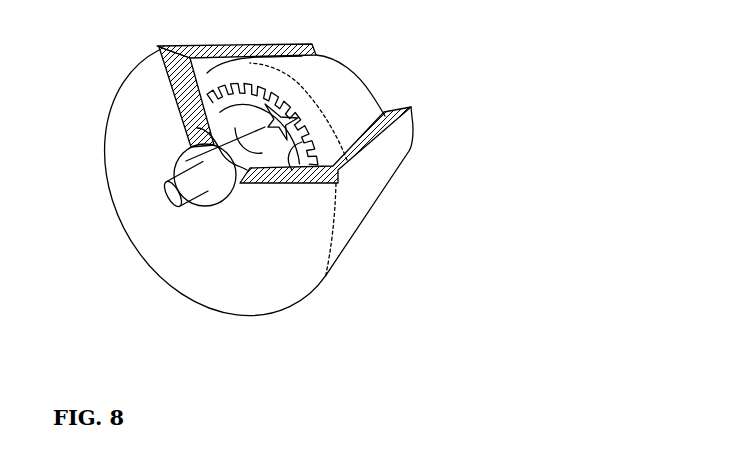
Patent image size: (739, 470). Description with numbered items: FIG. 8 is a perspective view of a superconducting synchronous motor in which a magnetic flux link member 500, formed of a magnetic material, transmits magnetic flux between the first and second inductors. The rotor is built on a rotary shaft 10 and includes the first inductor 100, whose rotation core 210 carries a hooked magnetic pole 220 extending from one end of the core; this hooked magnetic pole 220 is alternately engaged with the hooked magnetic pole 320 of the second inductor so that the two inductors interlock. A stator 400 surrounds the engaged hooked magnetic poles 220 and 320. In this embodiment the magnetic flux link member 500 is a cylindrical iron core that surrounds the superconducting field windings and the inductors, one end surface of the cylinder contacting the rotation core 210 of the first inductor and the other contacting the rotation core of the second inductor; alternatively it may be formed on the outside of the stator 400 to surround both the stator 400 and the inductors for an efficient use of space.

The rotary shaft 10 is at (170, 207).
The first inductor 100 is at (177, 167).
The rotation core 210 is at (197, 128).
The hooked magnetic pole 220 is at (293, 125).
The hooked magnetic pole 320 is at (226, 103).
The stator 400 is at (347, 72).
The magnetic flux link member 500 is at (213, 310).